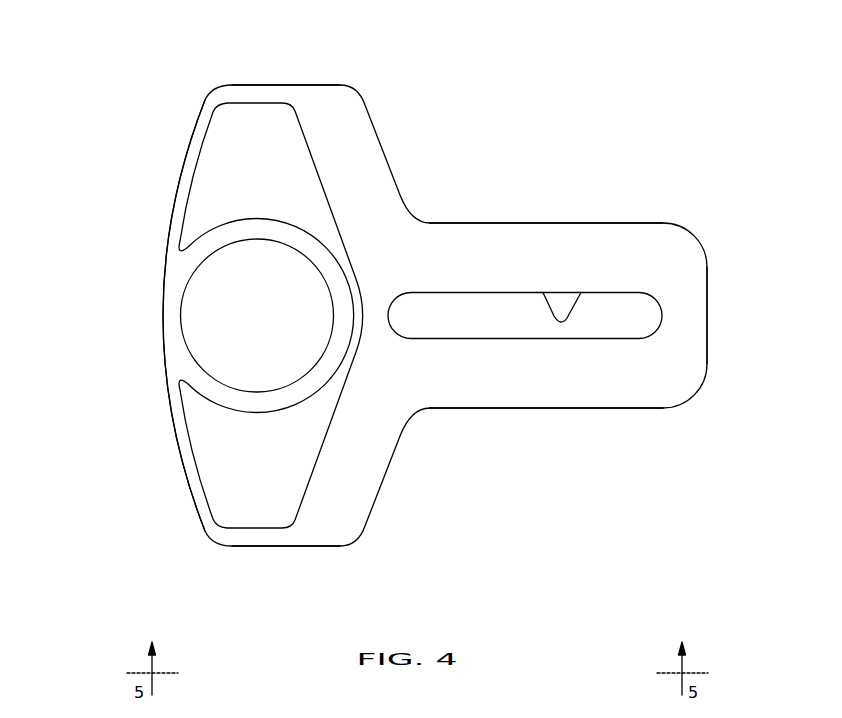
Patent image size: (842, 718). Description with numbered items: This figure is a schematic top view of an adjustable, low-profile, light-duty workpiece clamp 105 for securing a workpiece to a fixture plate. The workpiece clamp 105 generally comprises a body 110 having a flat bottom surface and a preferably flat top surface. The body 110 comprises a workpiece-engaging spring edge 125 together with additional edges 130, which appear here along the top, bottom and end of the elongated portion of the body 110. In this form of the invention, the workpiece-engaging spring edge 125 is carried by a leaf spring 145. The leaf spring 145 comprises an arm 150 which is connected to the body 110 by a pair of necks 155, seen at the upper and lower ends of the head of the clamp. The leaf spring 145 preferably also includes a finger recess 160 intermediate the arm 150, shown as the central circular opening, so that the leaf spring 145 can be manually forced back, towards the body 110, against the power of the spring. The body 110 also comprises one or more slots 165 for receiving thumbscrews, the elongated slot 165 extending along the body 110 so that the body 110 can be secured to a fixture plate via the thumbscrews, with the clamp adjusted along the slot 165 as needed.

The workpiece clamp 105 is at (413, 317).
The body 110 is at (667, 263).
The workpiece-engaging spring edge 125 is at (142, 293).
The additional edges 130 is at (500, 200).
The leaf spring 145 is at (165, 473).
The arm 150 is at (163, 432).
The necks 155 is at (280, 66).
The finger recess 160 is at (221, 327).
The slots 165 is at (581, 293).